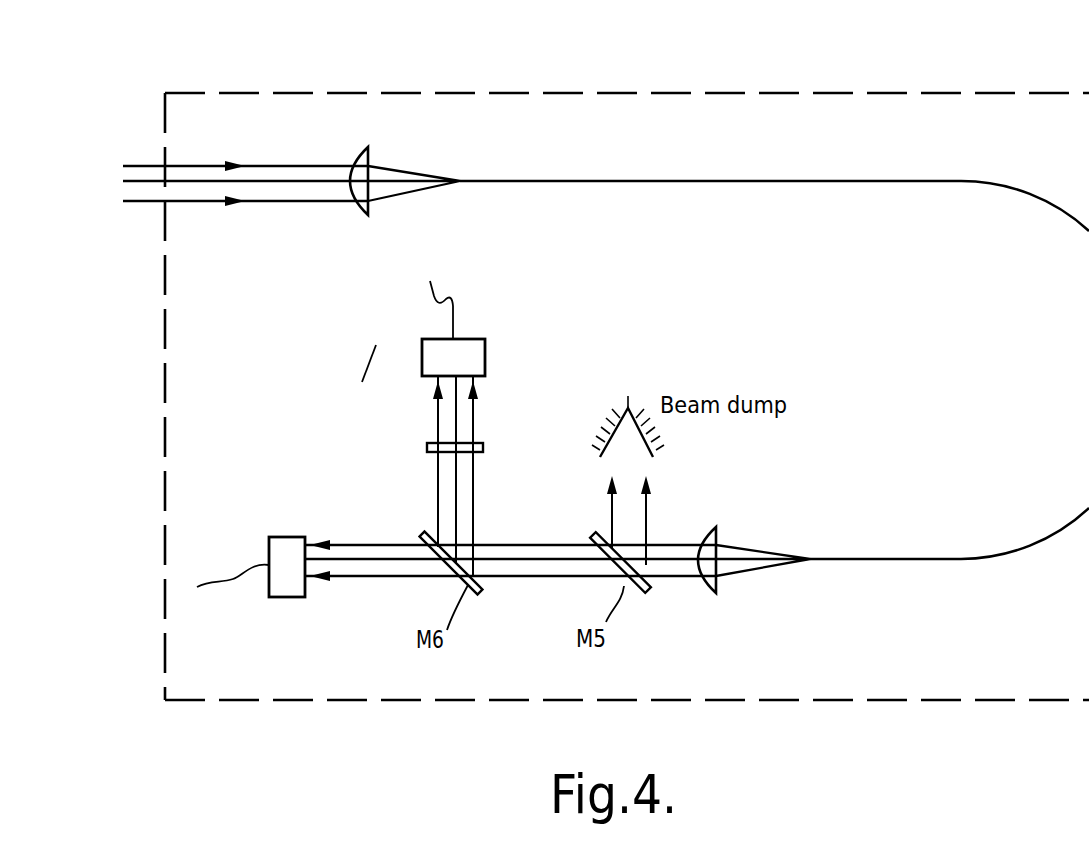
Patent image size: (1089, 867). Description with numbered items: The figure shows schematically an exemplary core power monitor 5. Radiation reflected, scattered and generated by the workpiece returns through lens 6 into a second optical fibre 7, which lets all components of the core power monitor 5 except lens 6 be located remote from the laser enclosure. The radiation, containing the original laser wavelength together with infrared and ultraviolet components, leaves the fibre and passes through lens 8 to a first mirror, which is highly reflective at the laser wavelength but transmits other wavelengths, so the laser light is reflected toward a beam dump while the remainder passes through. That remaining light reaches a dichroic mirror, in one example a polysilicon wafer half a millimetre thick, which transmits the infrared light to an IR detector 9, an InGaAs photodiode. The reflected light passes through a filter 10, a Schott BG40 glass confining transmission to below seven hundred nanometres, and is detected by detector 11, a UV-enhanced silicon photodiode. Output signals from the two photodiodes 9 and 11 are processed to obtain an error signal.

The core power monitor 5 is at (914, 91).
The lens 6 is at (353, 152).
The second optical fibre 7 is at (732, 177).
The lens 8 is at (715, 594).
The IR detector 9 is at (270, 538).
The filter 10 is at (483, 449).
The detector 11 is at (487, 348).